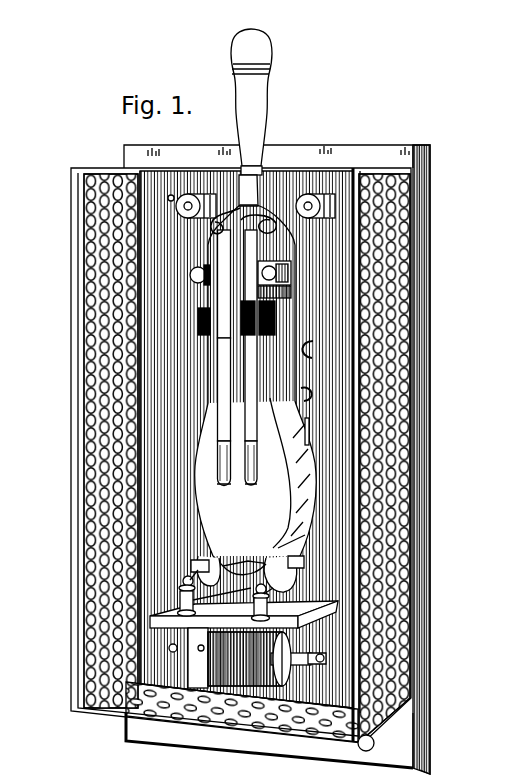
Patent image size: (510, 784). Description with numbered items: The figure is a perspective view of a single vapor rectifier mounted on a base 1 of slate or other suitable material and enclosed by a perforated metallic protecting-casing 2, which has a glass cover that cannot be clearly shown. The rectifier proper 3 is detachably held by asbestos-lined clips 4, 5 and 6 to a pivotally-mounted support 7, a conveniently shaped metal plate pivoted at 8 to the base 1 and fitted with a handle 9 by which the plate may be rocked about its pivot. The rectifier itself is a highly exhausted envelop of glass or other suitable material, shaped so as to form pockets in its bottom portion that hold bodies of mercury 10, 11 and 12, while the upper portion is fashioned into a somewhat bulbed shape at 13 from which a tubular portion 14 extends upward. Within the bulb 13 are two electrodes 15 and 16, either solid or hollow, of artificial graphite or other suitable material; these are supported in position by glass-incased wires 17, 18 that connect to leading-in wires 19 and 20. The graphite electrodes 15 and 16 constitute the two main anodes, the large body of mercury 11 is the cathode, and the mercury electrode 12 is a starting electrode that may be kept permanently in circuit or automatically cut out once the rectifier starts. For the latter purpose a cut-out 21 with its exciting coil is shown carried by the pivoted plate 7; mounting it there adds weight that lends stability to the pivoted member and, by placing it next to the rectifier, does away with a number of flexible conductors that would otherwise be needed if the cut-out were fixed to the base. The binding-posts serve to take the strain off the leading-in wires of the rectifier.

The base 1 is at (378, 147).
The perforated metallic protecting-casing 2 is at (388, 245).
The rectifier 3 is at (257, 497).
The asbestos-lined clip 4 is at (268, 314).
The asbestos-lined clip 5 is at (190, 553).
The asbestos-lined clip 6 is at (287, 553).
The pivotally-mounted support 7 is at (305, 375).
The pivot 8 is at (250, 360).
The handle 9 is at (252, 73).
The body of mercury 10 is at (185, 566).
The body of mercury 11 is at (180, 592).
The mercury electrode 12 is at (257, 573).
The bulb 13 is at (255, 477).
The tubular portion 14 is at (227, 363).
The electrode 15 is at (222, 455).
The electrode 16 is at (232, 478).
The glass-incased wire 17 is at (213, 293).
The glass-incased wire 18 is at (233, 343).
The leading-in wire 19 is at (217, 217).
The leading-in wire 20 is at (243, 213).
The cut-out 21 is at (218, 670).